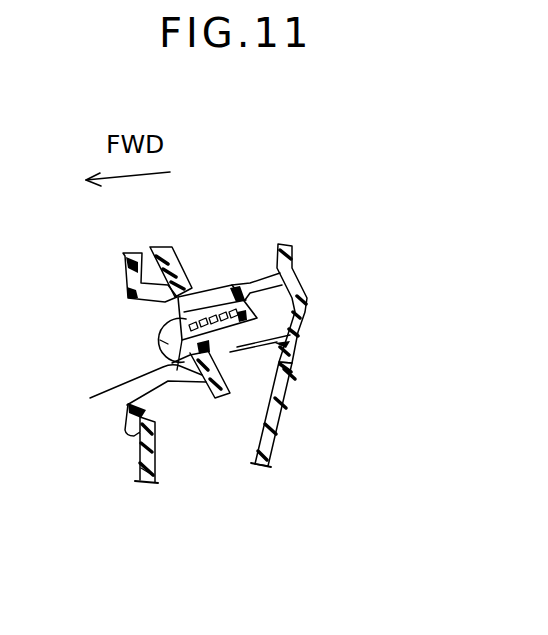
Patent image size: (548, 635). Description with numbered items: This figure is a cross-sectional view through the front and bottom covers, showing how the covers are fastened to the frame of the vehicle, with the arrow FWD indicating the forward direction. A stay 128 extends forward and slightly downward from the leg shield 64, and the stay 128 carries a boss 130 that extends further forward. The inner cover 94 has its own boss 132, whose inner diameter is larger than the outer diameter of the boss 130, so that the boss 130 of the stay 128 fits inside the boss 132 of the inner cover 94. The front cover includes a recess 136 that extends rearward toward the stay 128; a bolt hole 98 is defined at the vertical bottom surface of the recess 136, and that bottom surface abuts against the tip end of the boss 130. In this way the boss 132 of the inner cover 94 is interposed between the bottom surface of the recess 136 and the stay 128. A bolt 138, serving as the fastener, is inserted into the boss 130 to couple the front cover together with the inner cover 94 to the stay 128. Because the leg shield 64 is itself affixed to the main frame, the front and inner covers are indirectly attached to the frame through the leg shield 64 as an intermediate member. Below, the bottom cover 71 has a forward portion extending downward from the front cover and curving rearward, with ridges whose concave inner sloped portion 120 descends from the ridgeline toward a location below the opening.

The leg shield 64 is at (282, 420).
The bottom cover 71 is at (136, 469).
The inner cover 94 is at (218, 395).
The bolt hole 98 is at (165, 326).
The inner sloped portion 120 is at (139, 452).
The stay 128 is at (291, 354).
The boss 130 is at (213, 285).
The boss 132 is at (200, 287).
The recess 136 is at (92, 397).
The bolt 138 is at (162, 340).